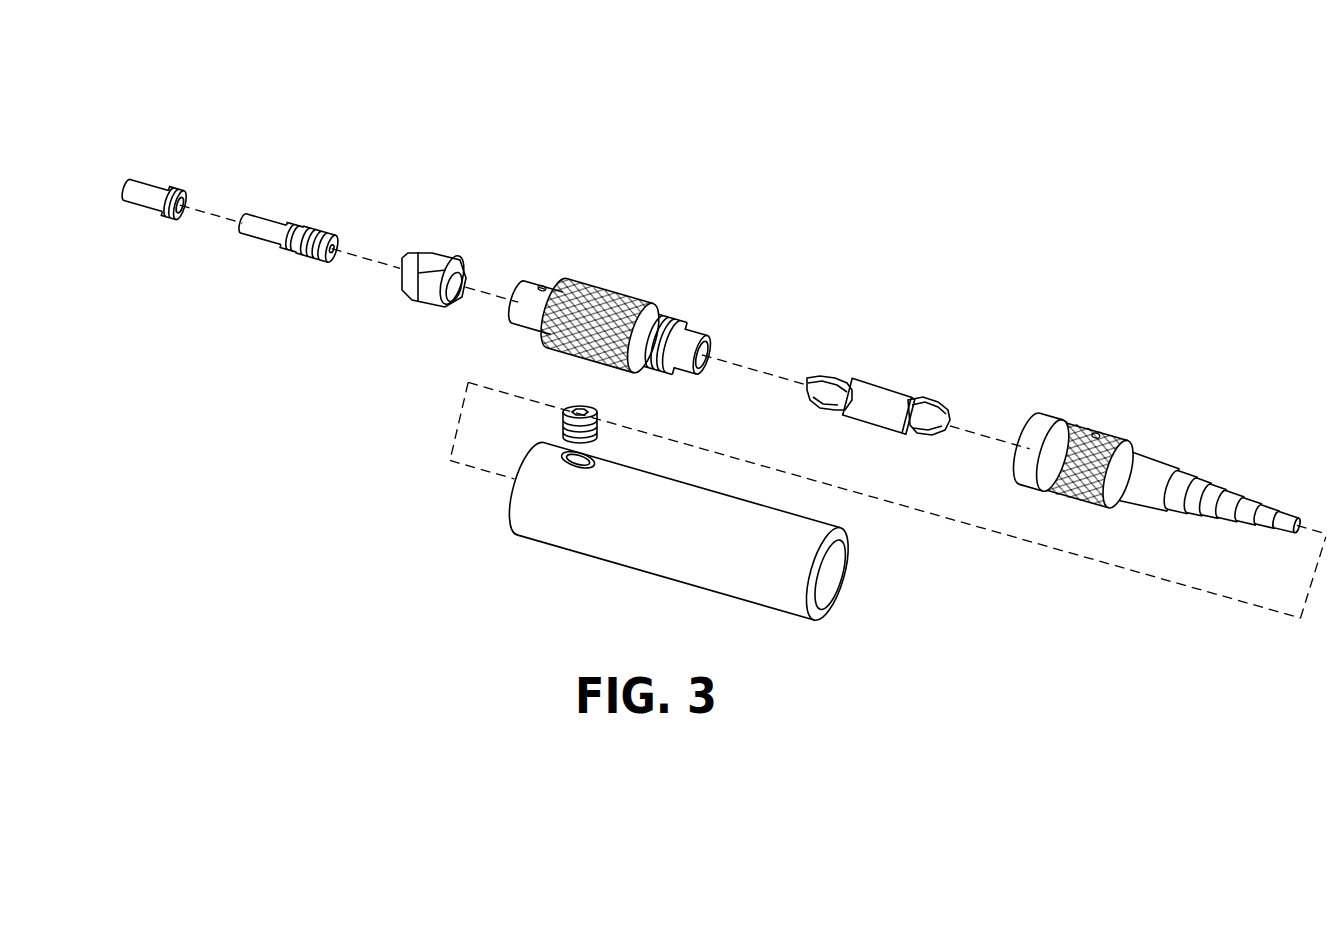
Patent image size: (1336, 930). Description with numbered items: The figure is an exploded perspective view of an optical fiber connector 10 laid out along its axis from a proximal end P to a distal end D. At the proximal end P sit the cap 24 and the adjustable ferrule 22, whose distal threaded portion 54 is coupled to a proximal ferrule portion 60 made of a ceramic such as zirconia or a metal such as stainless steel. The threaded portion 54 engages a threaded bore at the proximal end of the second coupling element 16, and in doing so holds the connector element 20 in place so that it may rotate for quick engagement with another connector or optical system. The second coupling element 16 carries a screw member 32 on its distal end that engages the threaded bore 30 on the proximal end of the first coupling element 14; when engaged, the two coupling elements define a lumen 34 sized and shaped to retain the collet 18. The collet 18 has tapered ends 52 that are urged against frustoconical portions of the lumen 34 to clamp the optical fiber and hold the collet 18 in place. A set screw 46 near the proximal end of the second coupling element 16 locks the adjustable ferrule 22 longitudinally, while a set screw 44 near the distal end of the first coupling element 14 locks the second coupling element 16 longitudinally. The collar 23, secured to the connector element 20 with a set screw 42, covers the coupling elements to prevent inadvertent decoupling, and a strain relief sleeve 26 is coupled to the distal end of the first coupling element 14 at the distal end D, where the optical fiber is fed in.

The optical fiber connector 10 is at (710, 384).
The first coupling element 14 is at (1074, 444).
The second coupling element 16 is at (627, 335).
The collet 18 is at (877, 420).
The connector element 20 is at (428, 300).
The ferrule 22 is at (285, 269).
The collar 23 is at (512, 508).
The cap 24 is at (115, 177).
The strain relief sleeve 26 is at (1187, 477).
The threaded bore 30 is at (1036, 430).
The screw member 32 is at (670, 320).
The lumen 34 is at (703, 361).
The set screw 42 is at (575, 404).
The set screw 44 is at (1096, 432).
The set screw 46 is at (548, 286).
The tapered ends 52 is at (820, 377).
The threaded portion 54 is at (310, 258).
The ferrule portion 60 is at (259, 243).
The proximal end P is at (154, 145).
The distal end D is at (1156, 446).